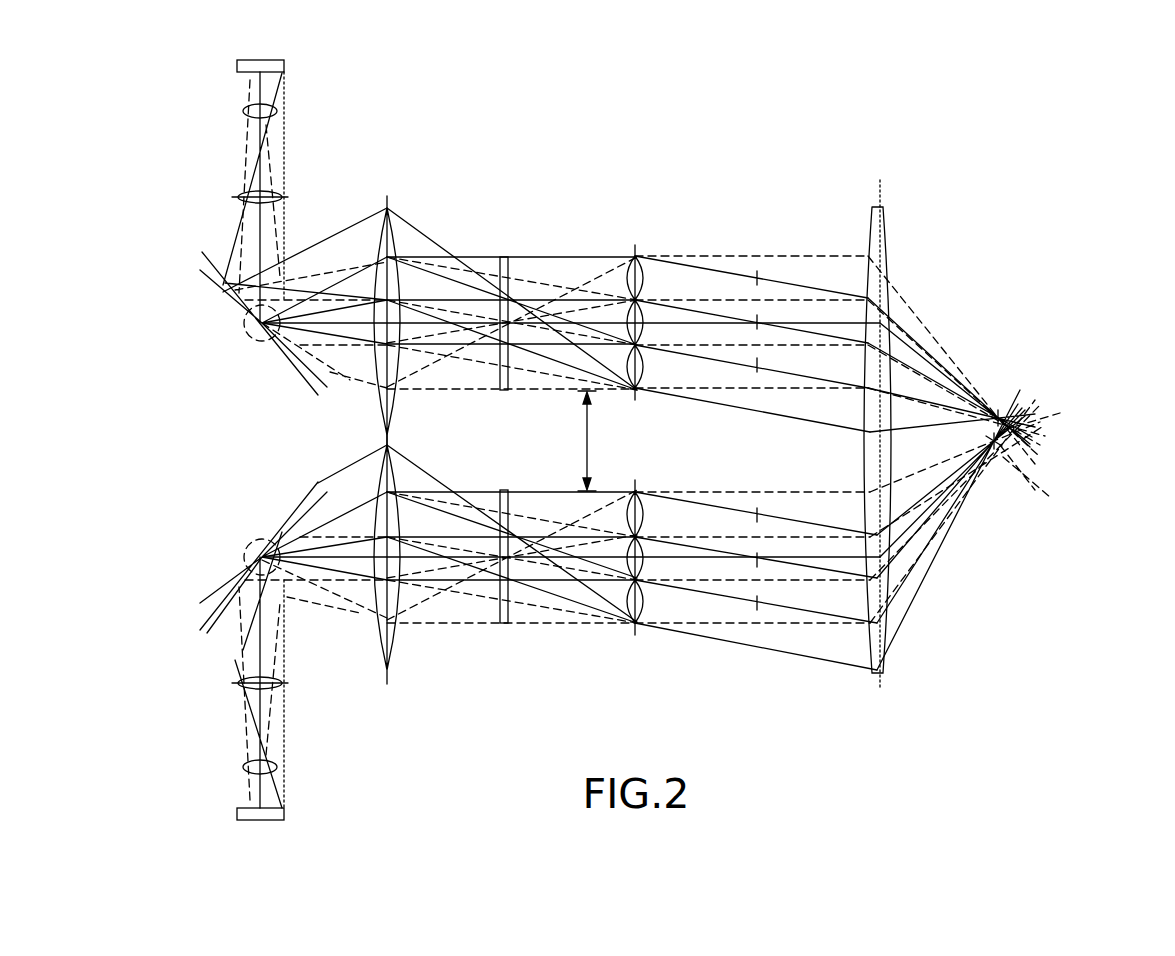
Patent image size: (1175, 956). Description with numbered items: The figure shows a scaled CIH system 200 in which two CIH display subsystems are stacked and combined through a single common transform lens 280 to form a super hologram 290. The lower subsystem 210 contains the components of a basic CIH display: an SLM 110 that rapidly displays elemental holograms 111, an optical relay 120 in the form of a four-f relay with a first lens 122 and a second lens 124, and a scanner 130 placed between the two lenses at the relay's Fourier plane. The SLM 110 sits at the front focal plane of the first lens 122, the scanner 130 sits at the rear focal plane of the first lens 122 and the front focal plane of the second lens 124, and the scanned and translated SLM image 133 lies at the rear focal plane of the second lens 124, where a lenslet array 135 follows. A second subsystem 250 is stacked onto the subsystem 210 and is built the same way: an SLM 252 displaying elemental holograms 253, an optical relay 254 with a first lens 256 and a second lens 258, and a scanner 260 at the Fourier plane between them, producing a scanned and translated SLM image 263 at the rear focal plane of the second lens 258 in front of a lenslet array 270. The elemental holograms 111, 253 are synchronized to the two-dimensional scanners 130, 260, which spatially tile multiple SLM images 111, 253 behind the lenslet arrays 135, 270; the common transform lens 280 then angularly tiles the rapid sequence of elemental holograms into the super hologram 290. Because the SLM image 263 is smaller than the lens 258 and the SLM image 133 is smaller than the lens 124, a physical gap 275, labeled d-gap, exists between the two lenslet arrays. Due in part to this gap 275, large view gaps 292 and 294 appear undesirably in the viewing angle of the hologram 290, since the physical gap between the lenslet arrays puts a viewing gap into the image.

The system 200 is at (1050, 140).
The SLM 110 is at (222, 814).
The elemental holograms 111 is at (241, 766).
The optical relay 120 is at (398, 748).
The first lens 122 is at (292, 687).
The second lens 124 is at (371, 665).
The scanner 130 is at (246, 539).
The scanned and translated SLM image 133 is at (506, 633).
The lenslet array 135 is at (640, 633).
The subsystem 210 is at (205, 672).
The second subsystem 250 is at (205, 203).
The SLM 252 is at (222, 63).
The elemental holograms 253 is at (241, 111).
The optical relay 254 is at (410, 118).
The first lens 256 is at (292, 195).
The second lens 258 is at (378, 201).
The scanner 260 is at (246, 341).
The scanned and translated SLM image 263 is at (504, 395).
The lenslet array 270 is at (640, 245).
The gap 275 is at (642, 440).
The common transform lens 280 is at (862, 200).
The super hologram 290 is at (998, 455).
The view gap 292 is at (1062, 388).
The view gap 294 is at (1072, 457).